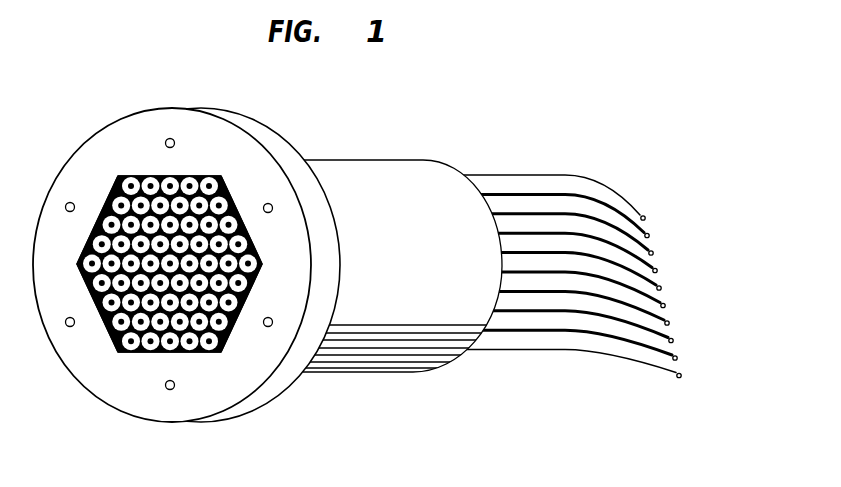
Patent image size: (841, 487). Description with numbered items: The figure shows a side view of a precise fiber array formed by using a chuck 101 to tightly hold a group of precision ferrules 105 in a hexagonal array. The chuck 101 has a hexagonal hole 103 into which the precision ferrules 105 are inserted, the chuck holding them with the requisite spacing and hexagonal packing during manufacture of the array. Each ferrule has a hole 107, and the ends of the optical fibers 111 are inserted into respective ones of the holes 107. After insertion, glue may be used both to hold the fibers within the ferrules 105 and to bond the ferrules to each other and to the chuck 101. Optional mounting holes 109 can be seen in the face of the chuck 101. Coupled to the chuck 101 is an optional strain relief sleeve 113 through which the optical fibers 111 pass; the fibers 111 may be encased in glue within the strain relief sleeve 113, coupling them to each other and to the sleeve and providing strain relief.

The chuck 101 is at (117, 408).
The hexagonal hole 103 is at (143, 177).
The precision ferrules 105 is at (219, 178).
The holes 107 is at (116, 198).
The mounting holes 109 is at (176, 382).
The optical fibers 111 is at (624, 196).
The strain relief sleeve 113 is at (443, 163).